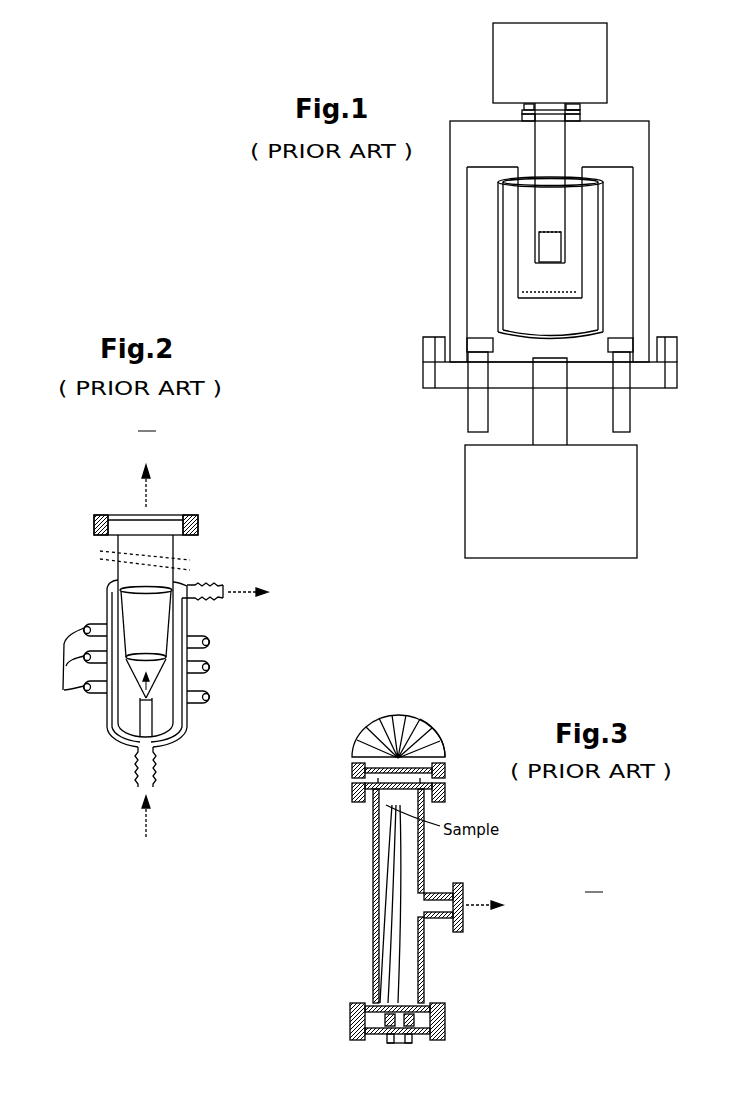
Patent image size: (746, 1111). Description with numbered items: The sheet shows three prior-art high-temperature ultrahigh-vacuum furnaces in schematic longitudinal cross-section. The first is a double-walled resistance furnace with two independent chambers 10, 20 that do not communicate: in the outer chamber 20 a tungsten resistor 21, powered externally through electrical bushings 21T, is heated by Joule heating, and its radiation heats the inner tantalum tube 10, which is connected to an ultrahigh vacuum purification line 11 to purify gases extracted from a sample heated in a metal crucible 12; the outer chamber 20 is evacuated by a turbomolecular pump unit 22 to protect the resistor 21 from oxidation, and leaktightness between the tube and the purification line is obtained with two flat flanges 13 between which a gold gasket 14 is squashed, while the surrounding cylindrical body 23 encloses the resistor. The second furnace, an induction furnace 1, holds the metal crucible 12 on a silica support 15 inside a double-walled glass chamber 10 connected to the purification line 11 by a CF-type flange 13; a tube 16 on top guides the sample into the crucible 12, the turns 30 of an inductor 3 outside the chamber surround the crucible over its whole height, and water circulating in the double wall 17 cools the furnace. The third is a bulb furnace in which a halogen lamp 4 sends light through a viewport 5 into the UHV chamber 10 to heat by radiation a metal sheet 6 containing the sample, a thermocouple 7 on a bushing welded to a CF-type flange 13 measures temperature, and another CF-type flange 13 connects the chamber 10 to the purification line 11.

In FIG. 2, the sample purification apparatus 1 is at (228, 554).
In FIG. 2, the inductor 3 is at (206, 694).
In FIG. 3, the halogen lamp 4 is at (364, 722).
In FIG. 3, the viewport 5 is at (434, 722).
In FIG. 3, the metal sheet 6 is at (372, 806).
In FIG. 3, the thermocouple 7 is at (412, 1044).
In FIG. 1, the chamber 10 is at (565, 132).
In FIG. 2, the chamber 10 is at (112, 565).
In FIG. 3, the chamber 10 is at (424, 848).
In FIG. 1, the purification line 11 is at (607, 62).
In FIG. 2, the purification line 11 is at (131, 463).
In FIG. 3, the purification line 11 is at (544, 897).
In FIG. 1, the crucible 12 is at (555, 245).
In FIG. 2, the crucible 12 is at (150, 706).
In FIG. 1, the flange 13 is at (524, 108).
In FIG. 2, the flange 13 is at (94, 525).
In FIG. 3, the flange 13 is at (464, 938).
In FIG. 1, the gold gasket 14 is at (582, 106).
In FIG. 2, the silica support 15 is at (122, 700).
In FIG. 2, the tube 16 is at (114, 617).
In FIG. 2, the double wall 17 is at (156, 757).
In FIG. 1, the outer chamber 20 is at (649, 133).
In FIG. 1, the tungsten resistor 21 is at (582, 281).
In FIG. 1, the electrical bushings 21T is at (478, 397).
In FIG. 1, the turbomolecular pump unit 22 is at (620, 503).
In FIG. 1, the outer cylinder 23 is at (498, 200).
In FIG. 2, the turns 30 is at (63, 670).